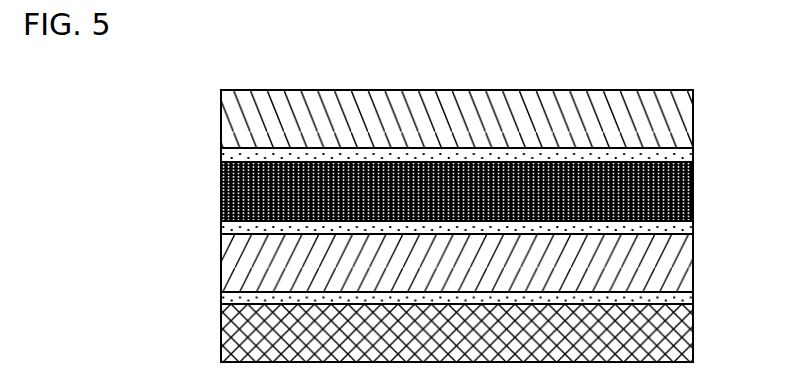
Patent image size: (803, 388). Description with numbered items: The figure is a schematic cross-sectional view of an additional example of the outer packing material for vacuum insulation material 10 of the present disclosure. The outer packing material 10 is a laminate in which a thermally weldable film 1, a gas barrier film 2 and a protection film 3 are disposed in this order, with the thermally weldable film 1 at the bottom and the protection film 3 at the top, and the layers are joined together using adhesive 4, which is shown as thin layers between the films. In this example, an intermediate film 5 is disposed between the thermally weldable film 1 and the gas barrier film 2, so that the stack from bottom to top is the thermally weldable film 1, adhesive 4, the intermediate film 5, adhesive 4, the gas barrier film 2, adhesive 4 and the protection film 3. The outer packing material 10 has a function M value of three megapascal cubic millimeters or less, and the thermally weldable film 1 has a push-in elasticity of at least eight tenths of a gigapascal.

The thermally weldable film 1 is at (677, 335).
The gas barrier film 2 is at (680, 183).
The protection film 3 is at (667, 110).
The adhesive 4 is at (229, 153).
The intermediate film 5 is at (673, 255).
The outer packing material for vacuum insulation material 10 is at (692, 73).